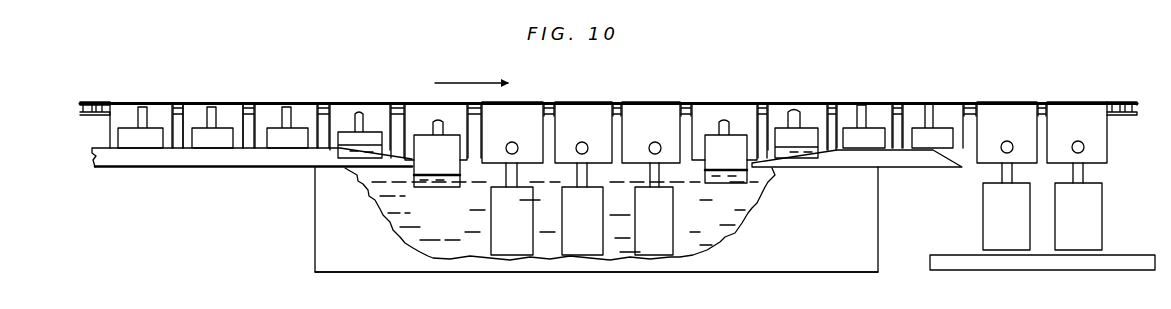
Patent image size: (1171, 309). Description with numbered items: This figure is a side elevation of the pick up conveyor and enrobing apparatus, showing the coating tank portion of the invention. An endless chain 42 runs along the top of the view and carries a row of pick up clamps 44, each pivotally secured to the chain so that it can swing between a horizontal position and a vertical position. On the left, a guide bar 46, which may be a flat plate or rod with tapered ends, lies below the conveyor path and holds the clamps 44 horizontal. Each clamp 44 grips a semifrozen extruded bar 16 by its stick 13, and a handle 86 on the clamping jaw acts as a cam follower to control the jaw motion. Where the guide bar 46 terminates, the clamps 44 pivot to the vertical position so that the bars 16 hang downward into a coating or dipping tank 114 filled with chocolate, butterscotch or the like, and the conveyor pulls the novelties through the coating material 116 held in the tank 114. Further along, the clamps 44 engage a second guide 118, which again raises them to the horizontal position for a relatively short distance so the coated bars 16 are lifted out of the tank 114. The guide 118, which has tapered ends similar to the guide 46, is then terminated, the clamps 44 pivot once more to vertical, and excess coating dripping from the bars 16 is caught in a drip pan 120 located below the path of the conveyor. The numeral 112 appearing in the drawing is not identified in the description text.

The stick 13 is at (652, 175).
The semifrozen extruded bar 16 is at (282, 140).
The endless chain 42 is at (92, 102).
The pick up clamp 44 is at (264, 102).
The guide bar 46 is at (160, 155).
The handle 86 is at (1085, 146).
The treating station 112 is at (649, 300).
The coating tank 114 is at (325, 232).
The liquid bath 116 is at (433, 223).
The second guide 118 is at (907, 157).
The drip pan 120 is at (1049, 260).